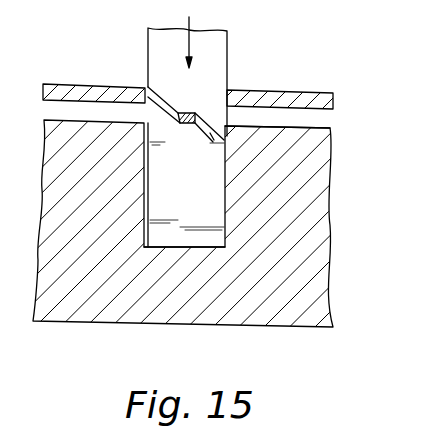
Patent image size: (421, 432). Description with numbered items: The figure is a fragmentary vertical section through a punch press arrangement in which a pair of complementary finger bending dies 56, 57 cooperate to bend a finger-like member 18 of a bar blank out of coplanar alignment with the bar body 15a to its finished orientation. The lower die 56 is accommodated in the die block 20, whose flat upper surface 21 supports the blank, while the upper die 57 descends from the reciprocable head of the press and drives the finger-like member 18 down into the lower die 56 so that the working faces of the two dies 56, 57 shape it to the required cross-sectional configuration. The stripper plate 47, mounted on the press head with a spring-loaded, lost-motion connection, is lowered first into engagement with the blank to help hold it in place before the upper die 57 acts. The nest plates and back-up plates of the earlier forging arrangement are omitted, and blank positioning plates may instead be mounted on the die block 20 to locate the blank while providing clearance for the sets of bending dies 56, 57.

The bar body 15a is at (188, 127).
The finger-like member 18 is at (163, 97).
The die block 20 is at (332, 208).
The flat upper surface 21 is at (323, 127).
The stripper plate 47 is at (327, 92).
The finger bending die 56 is at (193, 240).
The finger bending die 57 is at (218, 68).